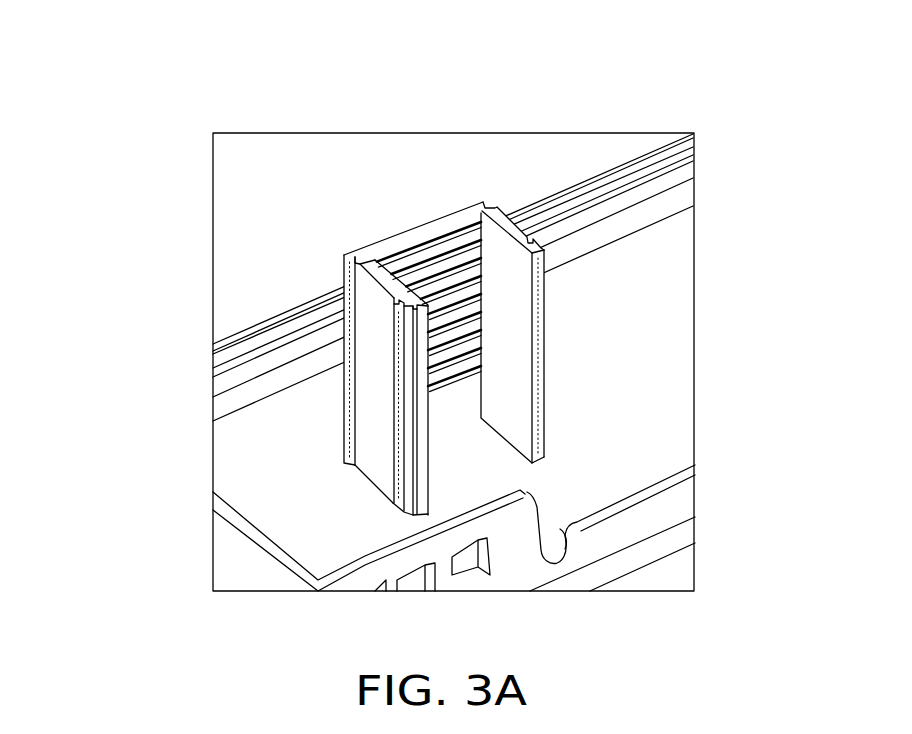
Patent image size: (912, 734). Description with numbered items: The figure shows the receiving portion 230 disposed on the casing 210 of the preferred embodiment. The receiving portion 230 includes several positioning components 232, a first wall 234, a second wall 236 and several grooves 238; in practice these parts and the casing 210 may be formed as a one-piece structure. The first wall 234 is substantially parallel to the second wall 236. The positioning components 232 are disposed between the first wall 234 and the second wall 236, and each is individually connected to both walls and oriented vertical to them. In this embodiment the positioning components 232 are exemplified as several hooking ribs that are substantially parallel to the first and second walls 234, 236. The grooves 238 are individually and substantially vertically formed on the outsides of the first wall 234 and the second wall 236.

The receiving portion 230 is at (77, 42).
The casing 210 is at (685, 324).
The positioning components 232 is at (412, 222).
The first wall 234 is at (369, 295).
The second wall 236 is at (497, 209).
The grooves 238 is at (402, 412).